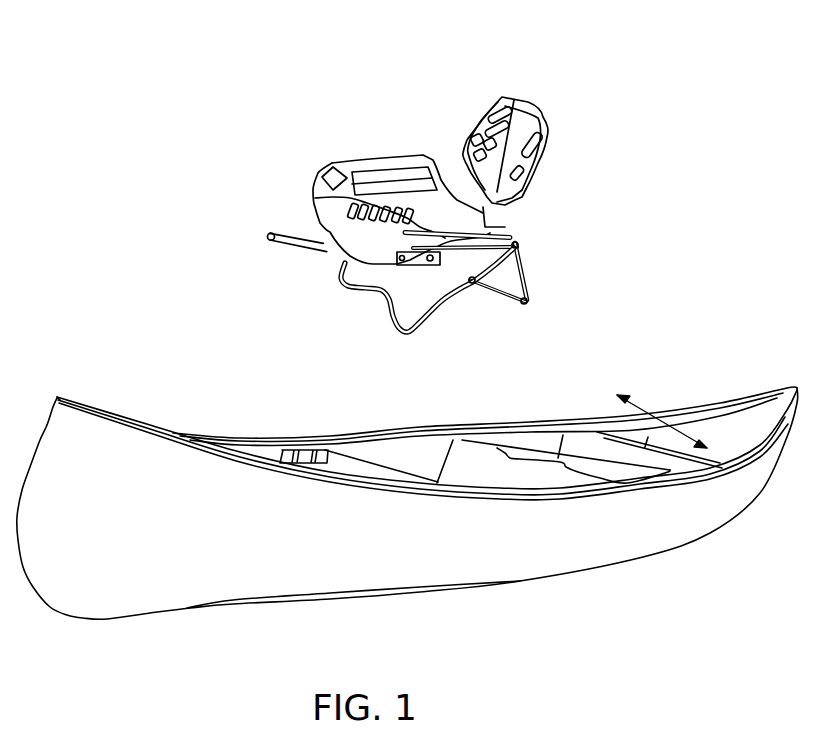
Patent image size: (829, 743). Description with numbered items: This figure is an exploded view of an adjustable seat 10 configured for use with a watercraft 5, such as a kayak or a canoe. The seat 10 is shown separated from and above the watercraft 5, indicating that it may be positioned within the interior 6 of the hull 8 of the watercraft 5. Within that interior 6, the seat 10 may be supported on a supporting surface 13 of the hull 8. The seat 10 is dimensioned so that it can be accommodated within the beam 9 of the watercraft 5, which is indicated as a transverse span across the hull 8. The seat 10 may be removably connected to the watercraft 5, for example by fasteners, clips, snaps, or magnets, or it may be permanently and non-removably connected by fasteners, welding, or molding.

The watercraft 5 is at (705, 327).
The interior 6 is at (523, 442).
The hull 8 is at (598, 545).
The beam 9 is at (650, 408).
The adjustable seat 10 is at (378, 58).
The supporting surface 13 is at (507, 470).